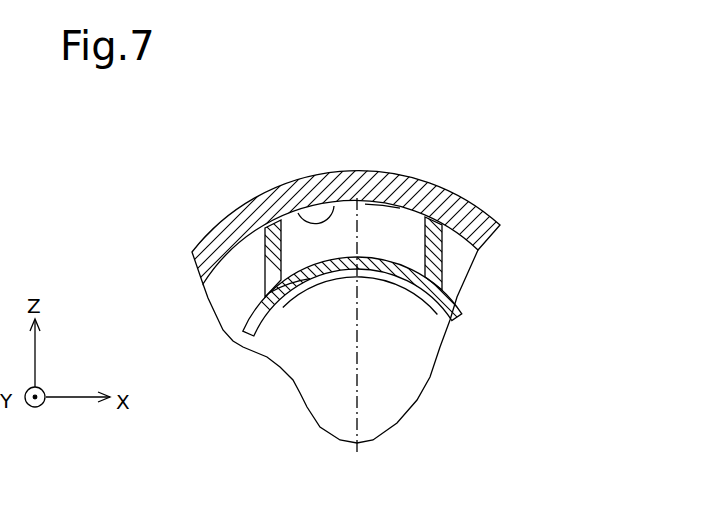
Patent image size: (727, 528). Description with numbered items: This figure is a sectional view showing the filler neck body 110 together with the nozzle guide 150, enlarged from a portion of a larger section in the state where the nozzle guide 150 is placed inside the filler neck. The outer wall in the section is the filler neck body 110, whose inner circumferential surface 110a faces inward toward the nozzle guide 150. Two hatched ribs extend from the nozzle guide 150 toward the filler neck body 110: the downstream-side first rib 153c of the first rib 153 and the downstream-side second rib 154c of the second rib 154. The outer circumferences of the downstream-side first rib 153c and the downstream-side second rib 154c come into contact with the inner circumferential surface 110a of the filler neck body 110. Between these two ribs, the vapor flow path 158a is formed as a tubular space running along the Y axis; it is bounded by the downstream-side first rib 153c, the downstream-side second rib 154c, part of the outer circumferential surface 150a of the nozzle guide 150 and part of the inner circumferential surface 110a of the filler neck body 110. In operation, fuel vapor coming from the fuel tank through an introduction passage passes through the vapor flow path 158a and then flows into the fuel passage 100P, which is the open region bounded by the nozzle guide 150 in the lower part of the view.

The filler neck body 110 is at (212, 242).
The inner circumferential surface 110a is at (301, 212).
The vapor flow path 158a is at (382, 210).
The first rib 153 is at (285, 290).
The downstream-side first rib 153c is at (270, 258).
The second rib 154 is at (495, 290).
The downstream-side second rib 154c is at (438, 255).
The nozzle guide 150 is at (461, 321).
The outer circumferential surface 150a is at (291, 289).
The fuel passage 100P is at (412, 376).